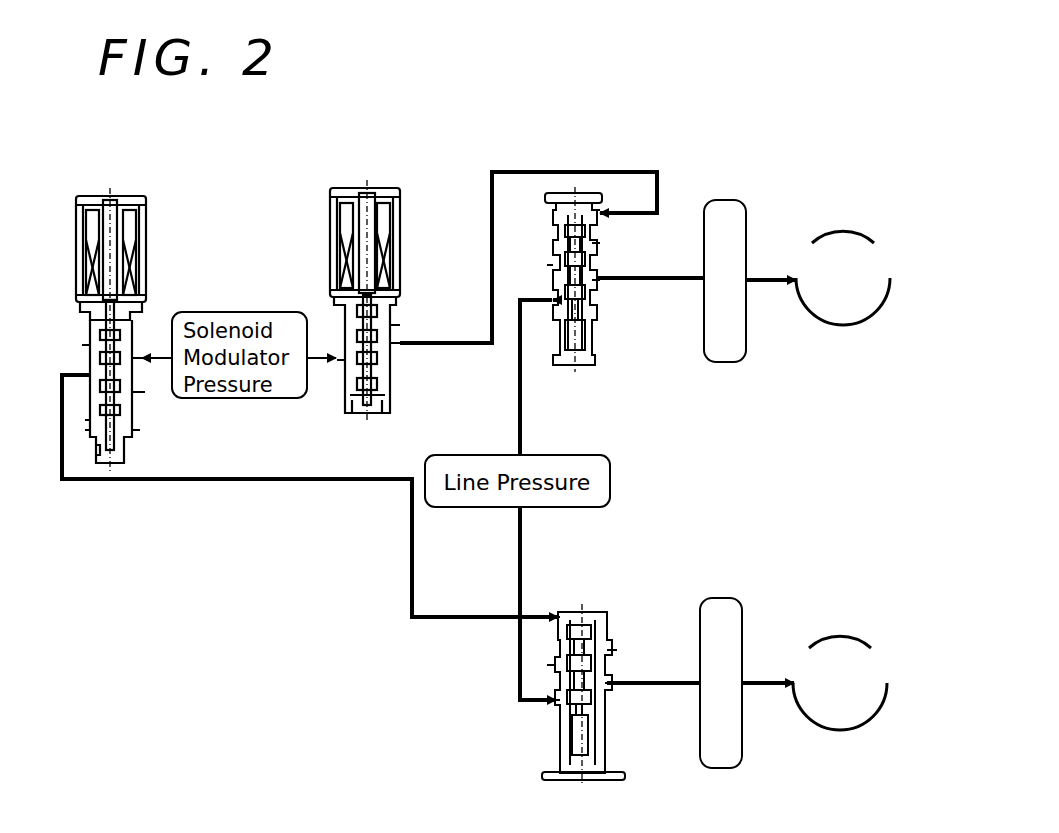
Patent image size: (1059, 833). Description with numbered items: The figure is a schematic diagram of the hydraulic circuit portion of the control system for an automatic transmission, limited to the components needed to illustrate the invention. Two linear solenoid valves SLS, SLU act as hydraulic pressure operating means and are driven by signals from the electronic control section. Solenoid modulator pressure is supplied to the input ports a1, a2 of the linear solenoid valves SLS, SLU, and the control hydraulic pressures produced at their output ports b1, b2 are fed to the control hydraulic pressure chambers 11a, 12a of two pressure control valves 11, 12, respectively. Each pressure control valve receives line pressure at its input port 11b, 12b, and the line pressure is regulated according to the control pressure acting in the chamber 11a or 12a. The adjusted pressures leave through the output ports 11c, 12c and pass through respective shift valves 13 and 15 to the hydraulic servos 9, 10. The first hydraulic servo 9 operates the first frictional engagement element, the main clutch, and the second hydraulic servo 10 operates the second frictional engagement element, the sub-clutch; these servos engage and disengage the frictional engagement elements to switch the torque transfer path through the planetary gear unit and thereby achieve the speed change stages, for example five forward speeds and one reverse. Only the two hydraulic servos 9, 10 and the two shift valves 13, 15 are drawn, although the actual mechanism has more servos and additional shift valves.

The linear solenoid valve SLS is at (132, 192).
The linear solenoid valve SLU is at (386, 187).
The input port a1 is at (150, 353).
The output port b1 is at (80, 372).
The input port a2 is at (336, 353).
The output port b2 is at (405, 338).
The pressure control valve 11 is at (568, 190).
The control hydraulic pressure chamber 11a is at (600, 208).
The input port 11b is at (549, 300).
The output port 11c is at (598, 283).
The pressure control valve 12 is at (608, 596).
The control hydraulic pressure chamber 12a is at (562, 612).
The input port 12b is at (556, 703).
The output port 12c is at (609, 684).
The shift valve 13 is at (725, 200).
The shift valve 15 is at (720, 598).
The first hydraulic servo 9 is at (843, 232).
The second hydraulic servo 10 is at (838, 640).